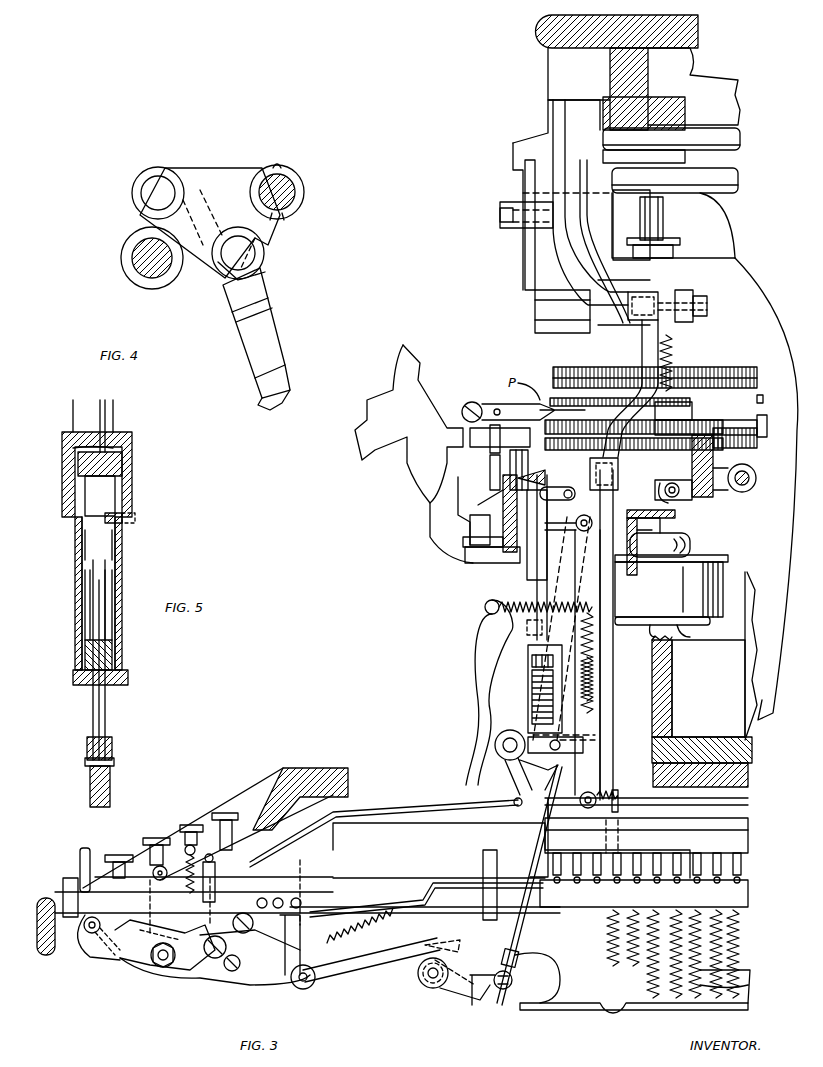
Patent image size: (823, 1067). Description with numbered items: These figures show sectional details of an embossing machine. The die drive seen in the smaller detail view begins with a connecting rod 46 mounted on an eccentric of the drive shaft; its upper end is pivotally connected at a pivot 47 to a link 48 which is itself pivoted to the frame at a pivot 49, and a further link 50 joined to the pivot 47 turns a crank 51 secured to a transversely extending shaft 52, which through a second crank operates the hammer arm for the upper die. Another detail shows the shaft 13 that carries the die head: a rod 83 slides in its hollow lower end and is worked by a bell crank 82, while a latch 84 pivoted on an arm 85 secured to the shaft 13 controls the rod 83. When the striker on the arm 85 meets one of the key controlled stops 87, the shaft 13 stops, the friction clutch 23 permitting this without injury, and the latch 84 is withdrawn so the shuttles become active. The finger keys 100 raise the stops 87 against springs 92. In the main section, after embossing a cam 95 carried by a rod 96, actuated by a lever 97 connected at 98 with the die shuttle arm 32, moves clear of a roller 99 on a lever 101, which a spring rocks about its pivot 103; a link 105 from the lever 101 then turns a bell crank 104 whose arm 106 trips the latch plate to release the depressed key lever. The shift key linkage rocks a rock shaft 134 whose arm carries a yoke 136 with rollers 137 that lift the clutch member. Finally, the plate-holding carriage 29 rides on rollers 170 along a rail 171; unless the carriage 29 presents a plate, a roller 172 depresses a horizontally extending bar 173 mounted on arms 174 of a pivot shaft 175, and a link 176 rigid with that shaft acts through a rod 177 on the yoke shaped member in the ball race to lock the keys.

In FIG. 5, the shaft 13 is at (100, 467).
In FIG. 3, the friction clutch 23 is at (669, 599).
In FIG. 3, the carriage 29 is at (414, 454).
In FIG. 3, the die shuttle arm 32 is at (690, 295).
In FIG. 4, the connecting rod 46 is at (280, 383).
In FIG. 4, the pivot 47 is at (246, 258).
In FIG. 4, the link 48 is at (270, 230).
In FIG. 4, the pivot 49 is at (292, 186).
In FIG. 4, the link 50 is at (195, 196).
In FIG. 4, the crank 51 is at (135, 220).
In FIG. 4, the transversely extending shaft 52 is at (130, 262).
In FIG. 5, the bell crank 82 is at (112, 765).
In FIG. 5, the rod 83 is at (98, 603).
In FIG. 5, the latch 84 is at (122, 523).
In FIG. 5, the arm 85 is at (132, 438).
In FIG. 3, the key controlled stop 87 is at (96, 960).
In FIG. 3, the spring 92 is at (740, 940).
In FIG. 3, the cam 95 is at (622, 562).
In FIG. 3, the rod 96 is at (613, 674).
In FIG. 3, the lever 97 is at (640, 393).
In FIG. 3, the connection 98 is at (628, 300).
In FIG. 3, the roller 99 is at (588, 515).
In FIG. 3, the finger key 100 is at (168, 820).
In FIG. 3, the lever 101 is at (500, 655).
In FIG. 3, the pivot 103 is at (495, 745).
In FIG. 3, the bell crank 104 is at (170, 925).
In FIG. 3, the link 105 is at (404, 800).
In FIG. 3, the arm 106 is at (140, 968).
In FIG. 3, the rock shaft 134 is at (742, 492).
In FIG. 3, the yoke 136 is at (676, 498).
In FIG. 3, the rollers 137 is at (660, 520).
In FIG. 3, the rollers 170 is at (528, 470).
In FIG. 3, the rail 171 is at (508, 560).
In FIG. 3, the roller 172 is at (510, 460).
In FIG. 3, the horizontally extending bar 173 is at (535, 482).
In FIG. 3, the arms 174 is at (557, 493).
In FIG. 3, the pivot shaft 175 is at (600, 508).
In FIG. 3, the link 176 is at (592, 765).
In FIG. 3, the rod 177 is at (453, 885).